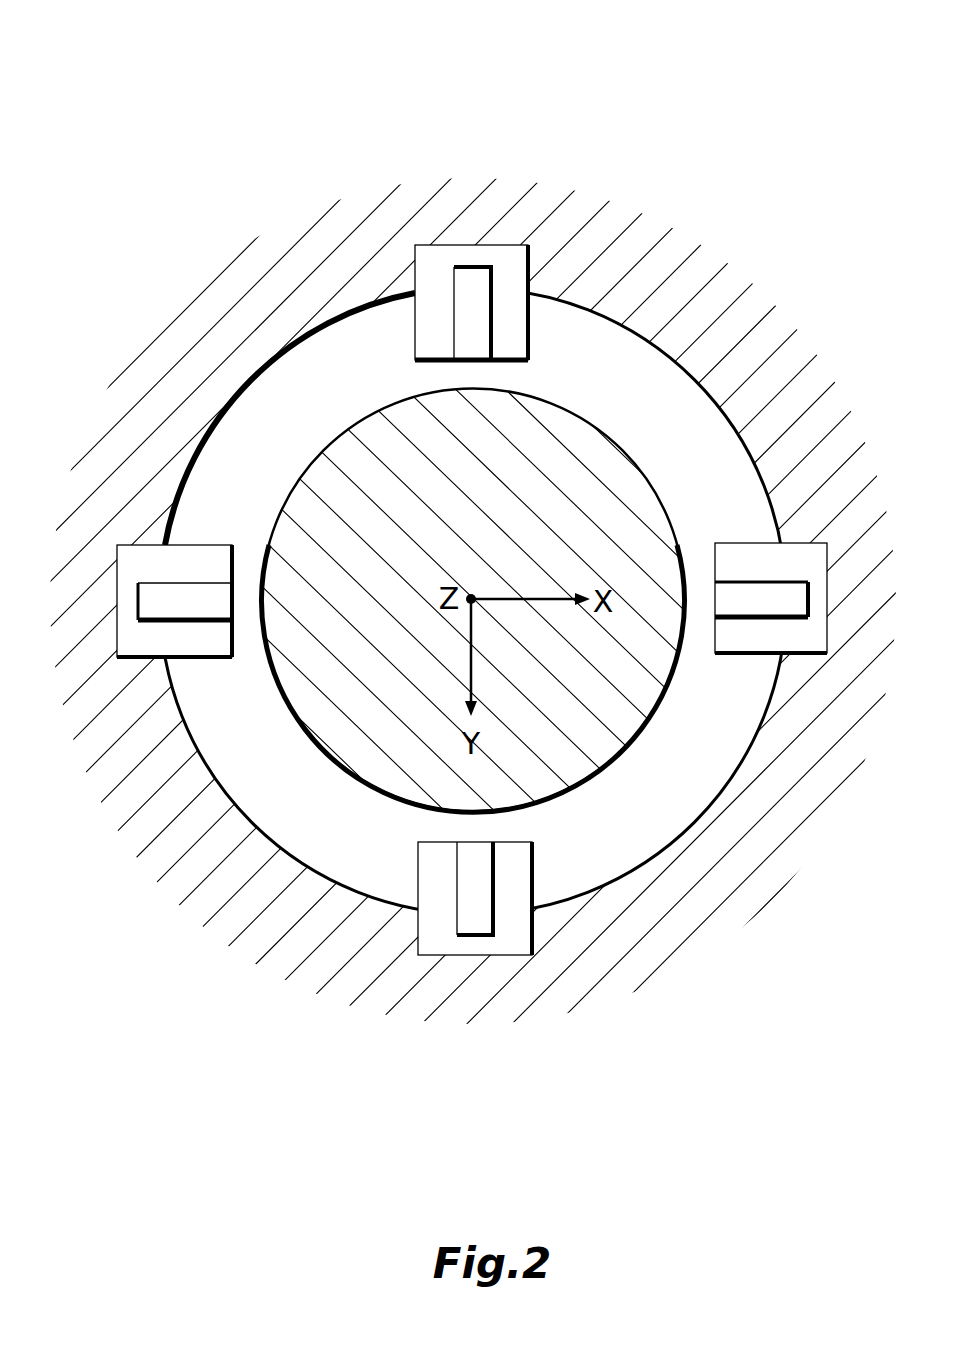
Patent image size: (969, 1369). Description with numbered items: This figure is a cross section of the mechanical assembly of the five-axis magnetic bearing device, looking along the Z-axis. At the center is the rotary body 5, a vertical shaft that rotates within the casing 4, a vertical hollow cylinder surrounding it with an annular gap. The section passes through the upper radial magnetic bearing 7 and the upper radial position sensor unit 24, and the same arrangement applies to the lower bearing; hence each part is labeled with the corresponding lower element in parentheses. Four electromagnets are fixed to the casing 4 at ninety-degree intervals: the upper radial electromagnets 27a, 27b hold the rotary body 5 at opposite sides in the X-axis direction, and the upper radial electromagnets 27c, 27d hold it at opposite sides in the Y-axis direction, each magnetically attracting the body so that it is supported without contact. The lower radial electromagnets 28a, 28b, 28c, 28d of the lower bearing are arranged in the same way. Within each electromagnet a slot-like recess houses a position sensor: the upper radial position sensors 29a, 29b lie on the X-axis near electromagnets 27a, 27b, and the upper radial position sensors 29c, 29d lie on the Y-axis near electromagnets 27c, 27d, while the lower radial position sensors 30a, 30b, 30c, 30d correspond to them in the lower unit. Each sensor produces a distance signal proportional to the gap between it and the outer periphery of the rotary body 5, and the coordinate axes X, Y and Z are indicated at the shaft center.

The casing 4 is at (630, 853).
The rotary body 5 is at (383, 432).
The upper radial magnetic bearing 7 is at (587, 969).
The upper radial position sensor unit 24 is at (423, 1031).
The upper radial electromagnet 27a is at (737, 533).
The upper radial electromagnet 27b is at (212, 666).
The upper radial electromagnet 27c is at (475, 996).
The upper radial electromagnet 27d is at (471, 208).
The lower radial electromagnet 28a is at (733, 557).
The lower radial electromagnet 28b is at (212, 642).
The lower radial electromagnet 28c is at (490, 950).
The lower radial electromagnet 28d is at (475, 257).
The upper radial position sensor 29a is at (735, 669).
The upper radial position sensor 29b is at (209, 528).
The upper radial position sensor 29c is at (396, 860).
The upper radial position sensor 29d is at (545, 337).
The lower radial position sensor 30a is at (718, 602).
The lower radial position sensor 30b is at (225, 595).
The lower radial position sensor 30c is at (473, 848).
The lower radial position sensor 30d is at (475, 352).